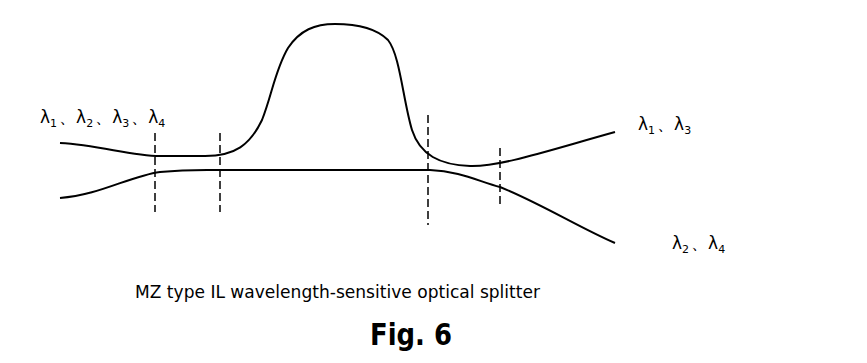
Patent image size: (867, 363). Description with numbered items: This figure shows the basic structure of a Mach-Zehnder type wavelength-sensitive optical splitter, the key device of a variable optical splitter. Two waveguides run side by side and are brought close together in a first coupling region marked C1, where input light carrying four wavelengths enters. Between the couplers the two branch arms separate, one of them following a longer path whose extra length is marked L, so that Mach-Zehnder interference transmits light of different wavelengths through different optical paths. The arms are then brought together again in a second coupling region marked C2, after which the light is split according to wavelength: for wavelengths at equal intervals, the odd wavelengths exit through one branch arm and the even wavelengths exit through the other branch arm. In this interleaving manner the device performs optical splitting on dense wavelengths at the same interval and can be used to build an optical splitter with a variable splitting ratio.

The first coupler region C1 is at (187, 175).
The second coupler region C2 is at (464, 172).
The interferometer arm length region L is at (324, 194).